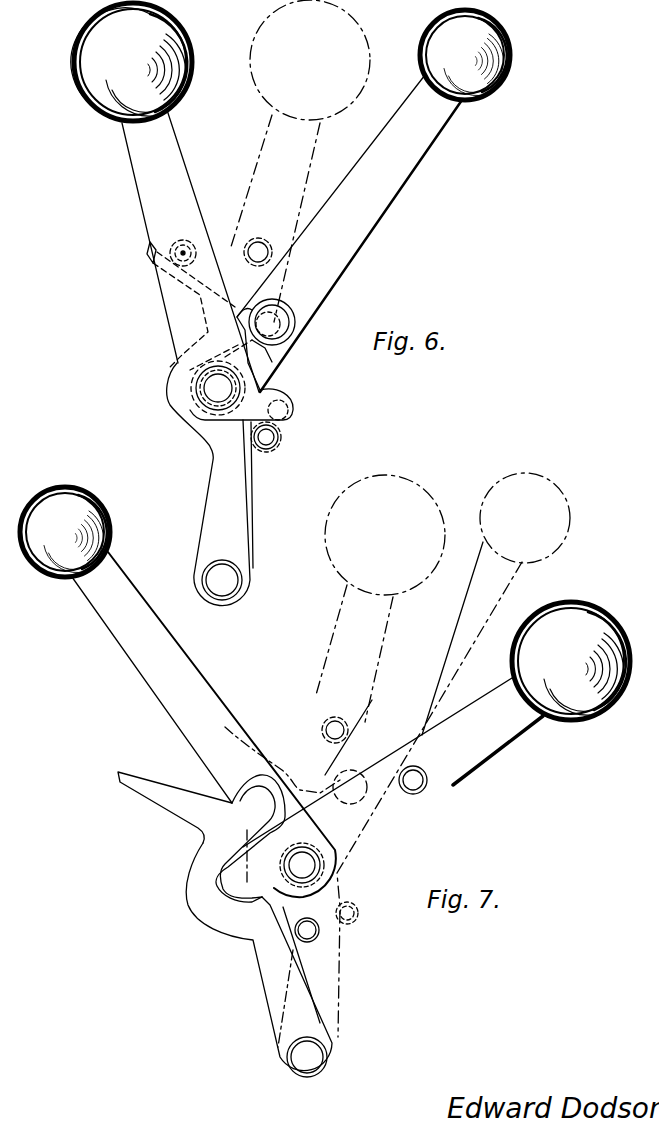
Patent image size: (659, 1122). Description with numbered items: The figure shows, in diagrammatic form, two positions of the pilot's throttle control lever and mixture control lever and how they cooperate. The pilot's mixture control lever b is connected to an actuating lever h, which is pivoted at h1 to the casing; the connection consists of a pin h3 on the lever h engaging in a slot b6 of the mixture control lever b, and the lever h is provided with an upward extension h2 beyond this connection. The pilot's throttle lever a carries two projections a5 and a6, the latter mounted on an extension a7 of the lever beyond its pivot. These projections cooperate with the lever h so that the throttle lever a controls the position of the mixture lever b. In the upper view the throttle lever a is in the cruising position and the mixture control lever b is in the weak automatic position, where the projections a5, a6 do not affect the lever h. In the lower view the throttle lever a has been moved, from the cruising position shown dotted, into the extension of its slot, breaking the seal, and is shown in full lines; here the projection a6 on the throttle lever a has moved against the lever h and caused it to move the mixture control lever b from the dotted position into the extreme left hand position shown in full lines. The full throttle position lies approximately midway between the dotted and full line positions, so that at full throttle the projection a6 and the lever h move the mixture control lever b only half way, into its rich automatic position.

In FIG. 6, the pilot's throttle lever a is at (250, 55).
In FIG. 7, the pilot's throttle lever a is at (360, 623).
In FIG. 6, the projection a5 is at (256, 250).
In FIG. 7, the projection a5 is at (325, 727).
In FIG. 6, the projection a6 is at (279, 438).
In FIG. 7, the projection a6 is at (320, 930).
In FIG. 6, the extension a7 is at (290, 399).
In FIG. 6, the pilot's mixture control lever b is at (380, 200).
In FIG. 7, the pilot's mixture control lever b is at (137, 660).
In FIG. 6, the slot b6 is at (270, 362).
In FIG. 6, the actuating lever h is at (213, 458).
In FIG. 7, the actuating lever h is at (300, 995).
In FIG. 6, the pivot h1 is at (228, 578).
In FIG. 7, the pivot h1 is at (307, 1055).
In FIG. 6, the upward extension h2 is at (146, 248).
In FIG. 7, the upward extension h2 is at (136, 780).
In FIG. 6, the pin h3 is at (268, 322).